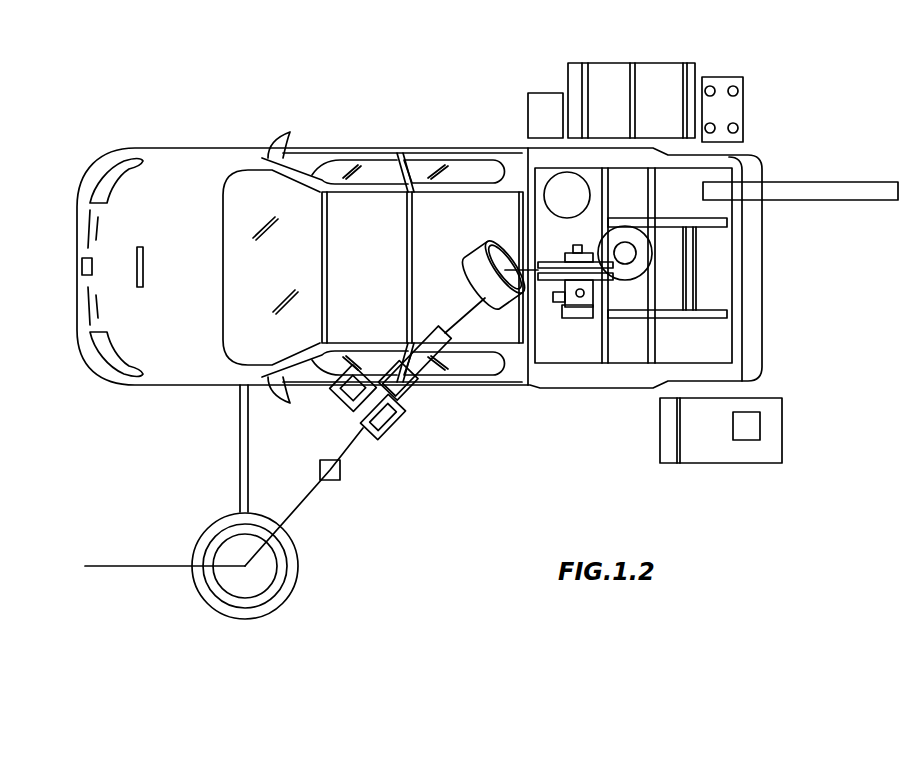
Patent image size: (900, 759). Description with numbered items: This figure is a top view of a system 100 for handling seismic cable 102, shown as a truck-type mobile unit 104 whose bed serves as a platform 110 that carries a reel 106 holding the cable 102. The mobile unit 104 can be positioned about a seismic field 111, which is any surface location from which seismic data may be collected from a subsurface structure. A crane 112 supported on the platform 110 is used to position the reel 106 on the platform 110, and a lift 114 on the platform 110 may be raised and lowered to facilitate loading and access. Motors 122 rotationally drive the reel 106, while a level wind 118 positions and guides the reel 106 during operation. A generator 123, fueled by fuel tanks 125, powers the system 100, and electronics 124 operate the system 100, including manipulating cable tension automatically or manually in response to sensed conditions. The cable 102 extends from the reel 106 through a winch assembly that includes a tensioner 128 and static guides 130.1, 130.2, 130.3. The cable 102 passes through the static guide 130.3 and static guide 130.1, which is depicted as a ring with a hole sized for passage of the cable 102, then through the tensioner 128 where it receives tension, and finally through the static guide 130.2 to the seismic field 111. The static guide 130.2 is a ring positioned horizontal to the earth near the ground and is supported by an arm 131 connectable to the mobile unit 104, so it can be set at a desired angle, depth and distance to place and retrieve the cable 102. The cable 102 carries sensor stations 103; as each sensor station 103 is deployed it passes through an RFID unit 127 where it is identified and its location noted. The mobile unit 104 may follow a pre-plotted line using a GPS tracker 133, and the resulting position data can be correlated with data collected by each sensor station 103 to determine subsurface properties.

The system 100 is at (120, 107).
The mobile unit 104 is at (92, 175).
The arm 131 is at (238, 440).
The static guide 130.2 is at (193, 540).
The seismic field 111 is at (348, 587).
The seismic cable 102 is at (318, 488).
The sensor station 103 is at (340, 472).
The RFID unit 127 is at (397, 427).
The tensioner 128 is at (407, 380).
The static guide 130.1 is at (473, 267).
The platform 110 is at (708, 335).
The reel 106 is at (697, 263).
The lift 114 is at (763, 252).
The crane 112 is at (810, 182).
The static guide 130.3 is at (630, 250).
The motor 122 is at (580, 318).
The level wind 118 is at (601, 318).
The generator 123 is at (608, 72).
The fuel tank 125 is at (720, 90).
The electronics 124 is at (773, 443).
The GPS tracker 133 is at (745, 422).